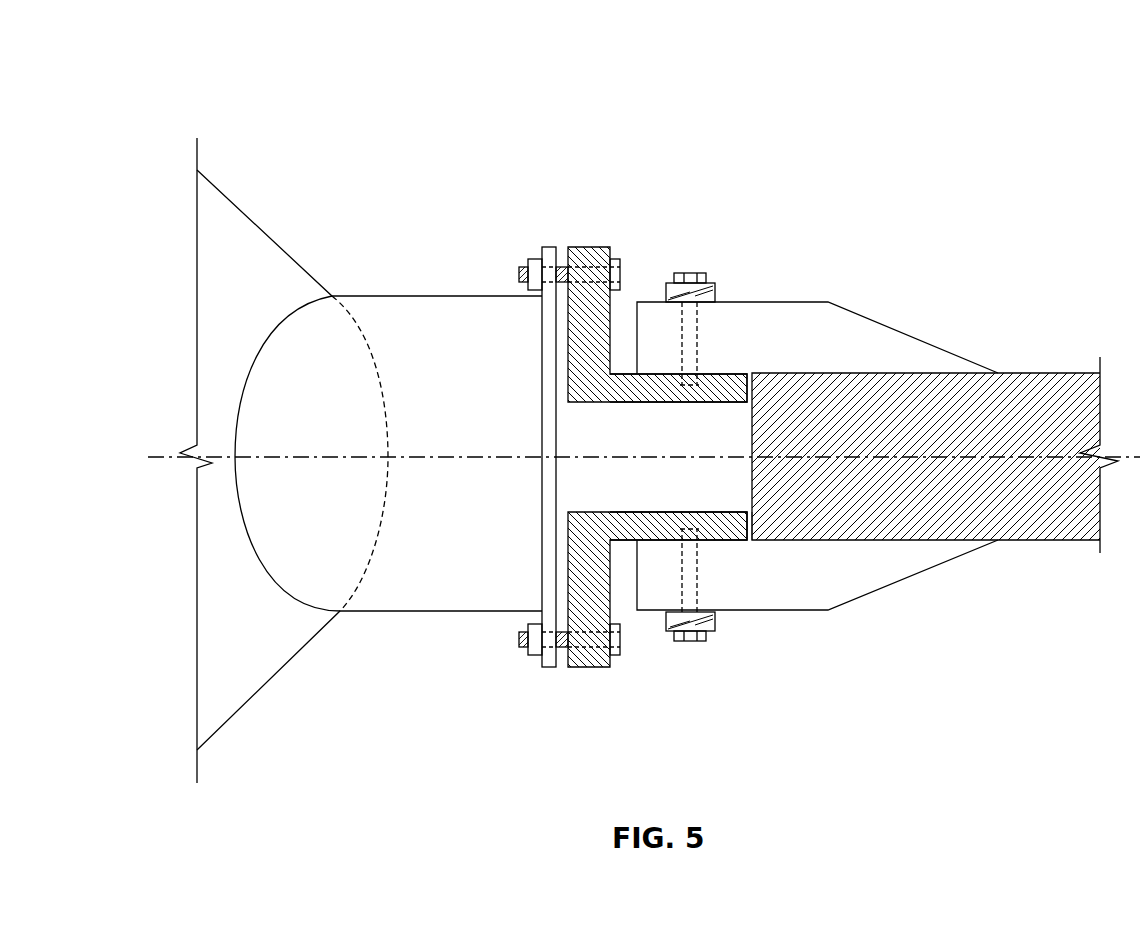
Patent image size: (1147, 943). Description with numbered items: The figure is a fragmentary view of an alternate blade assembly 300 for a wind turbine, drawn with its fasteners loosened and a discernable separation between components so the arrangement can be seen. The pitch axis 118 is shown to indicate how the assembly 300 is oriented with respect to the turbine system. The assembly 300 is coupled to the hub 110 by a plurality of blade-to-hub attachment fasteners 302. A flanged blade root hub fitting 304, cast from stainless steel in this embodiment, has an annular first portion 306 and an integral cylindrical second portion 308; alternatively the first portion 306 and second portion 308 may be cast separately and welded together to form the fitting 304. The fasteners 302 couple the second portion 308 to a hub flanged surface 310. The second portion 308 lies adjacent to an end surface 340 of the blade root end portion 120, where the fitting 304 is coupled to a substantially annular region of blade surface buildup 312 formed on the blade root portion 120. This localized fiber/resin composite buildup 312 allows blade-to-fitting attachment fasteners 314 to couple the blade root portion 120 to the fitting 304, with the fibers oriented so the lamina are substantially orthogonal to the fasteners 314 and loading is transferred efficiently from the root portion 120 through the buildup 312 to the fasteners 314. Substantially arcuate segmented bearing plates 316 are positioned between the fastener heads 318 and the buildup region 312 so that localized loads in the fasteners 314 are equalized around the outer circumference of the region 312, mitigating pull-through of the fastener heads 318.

The blade assembly 300 is at (245, 70).
The hub 110 is at (266, 302).
The pitch axis 118 is at (507, 456).
The blade root end portion 120 is at (1040, 383).
The blade-to-hub attachment fasteners 302 is at (520, 273).
The flanged blade root hub fitting 304 is at (659, 190).
The annular first portion 306 is at (588, 247).
The cylindrical second portion 308 is at (668, 402).
The hub flanged surface 310 is at (548, 247).
The blade surface buildup 312 is at (826, 349).
The blade-to-fitting attachment fasteners 314 is at (690, 340).
The segmented bearing plates 316 is at (718, 285).
The fastener heads 318 is at (692, 272).
The end surface 340 is at (750, 480).